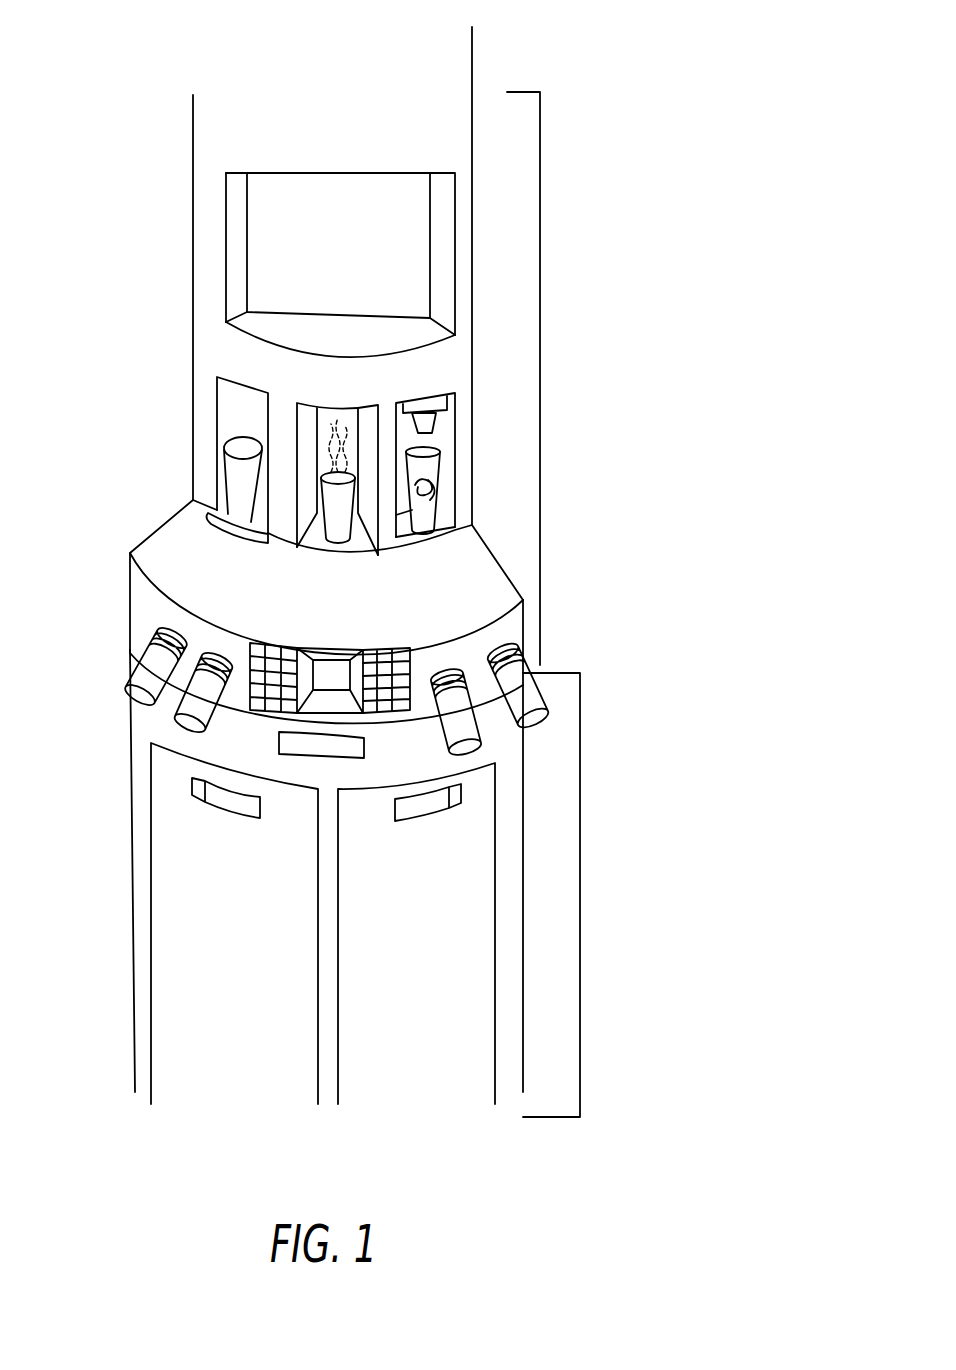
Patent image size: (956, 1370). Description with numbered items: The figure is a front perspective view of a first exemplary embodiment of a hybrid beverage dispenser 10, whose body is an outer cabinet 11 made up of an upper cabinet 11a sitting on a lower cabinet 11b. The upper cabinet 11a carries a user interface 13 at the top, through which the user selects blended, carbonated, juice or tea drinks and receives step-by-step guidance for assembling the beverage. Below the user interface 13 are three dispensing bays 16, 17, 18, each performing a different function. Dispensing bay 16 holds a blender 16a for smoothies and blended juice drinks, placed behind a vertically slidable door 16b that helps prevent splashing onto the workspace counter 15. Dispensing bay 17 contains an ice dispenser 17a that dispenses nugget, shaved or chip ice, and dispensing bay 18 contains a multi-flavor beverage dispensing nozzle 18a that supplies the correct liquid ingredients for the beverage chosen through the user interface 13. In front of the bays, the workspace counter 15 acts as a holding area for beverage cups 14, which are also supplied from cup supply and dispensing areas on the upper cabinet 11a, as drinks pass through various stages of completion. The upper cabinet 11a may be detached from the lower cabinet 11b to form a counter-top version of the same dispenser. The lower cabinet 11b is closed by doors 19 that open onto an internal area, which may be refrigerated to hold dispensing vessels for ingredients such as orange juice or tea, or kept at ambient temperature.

The hybrid beverage dispenser 10 is at (545, 332).
The outer cabinet 11 is at (520, 600).
The upper cabinet 11a is at (389, 346).
The lower cabinet 11b is at (378, 884).
The user interface 13 is at (257, 213).
The beverage cups 14 is at (148, 668).
The workspace counter 15 is at (173, 543).
The dispensing bay 16 is at (227, 417).
The blender 16a is at (252, 435).
The vertically slidable door 16b is at (213, 513).
The dispensing bay 17 is at (370, 518).
The ice dispenser 17a is at (323, 478).
The dispensing bay 18 is at (417, 413).
The multi-flavor beverage dispensing nozzle 18a is at (437, 433).
The doors 19 is at (417, 1057).